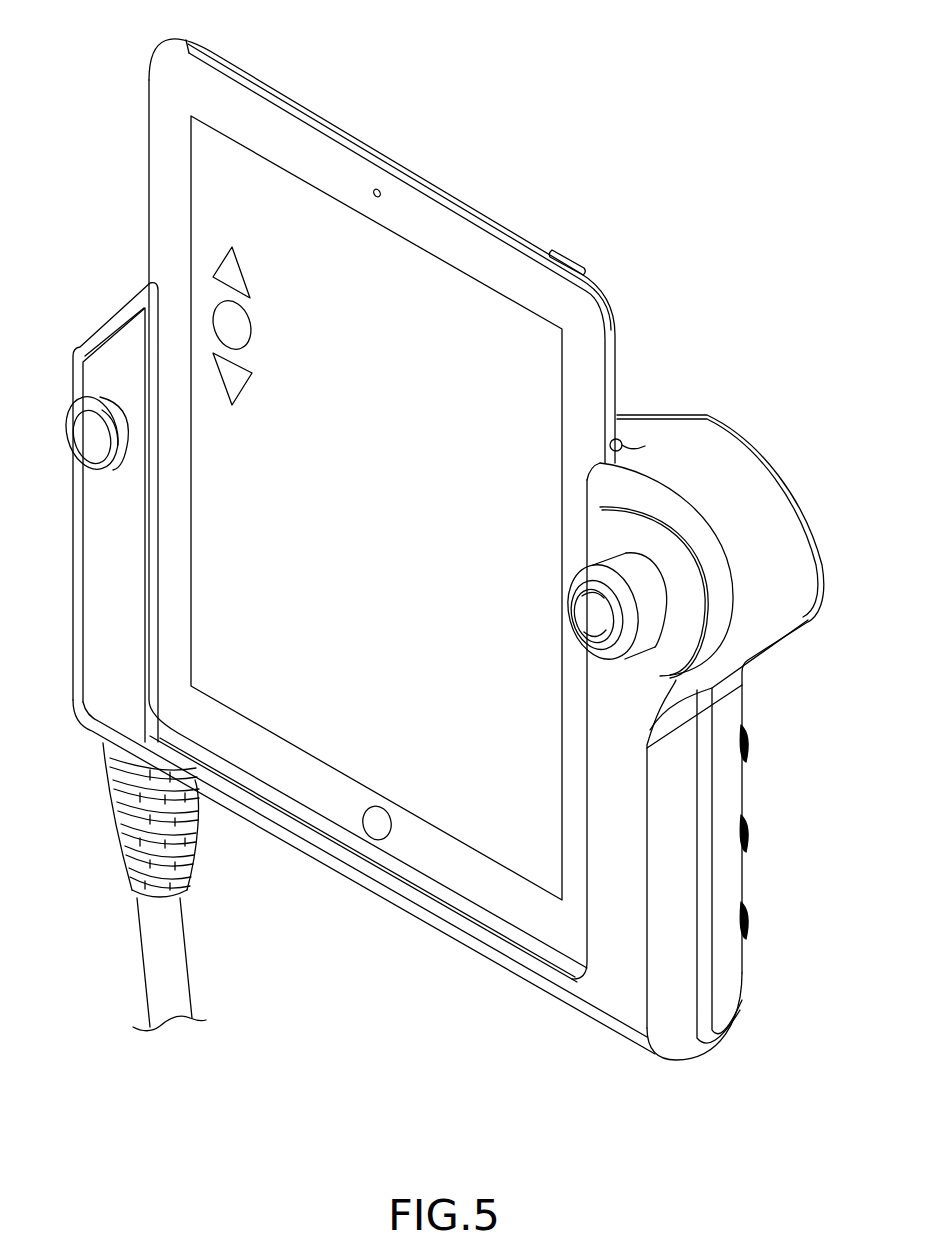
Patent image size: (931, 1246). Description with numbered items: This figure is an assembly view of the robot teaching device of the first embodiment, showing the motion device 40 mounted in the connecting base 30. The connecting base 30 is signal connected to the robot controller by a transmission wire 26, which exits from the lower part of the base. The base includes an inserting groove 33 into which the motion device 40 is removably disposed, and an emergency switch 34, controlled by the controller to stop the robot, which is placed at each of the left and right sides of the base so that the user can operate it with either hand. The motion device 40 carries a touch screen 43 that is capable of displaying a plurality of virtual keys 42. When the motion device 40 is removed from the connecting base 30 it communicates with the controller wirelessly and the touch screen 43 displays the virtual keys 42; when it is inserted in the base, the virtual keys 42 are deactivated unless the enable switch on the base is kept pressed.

The transmission wire 26 is at (160, 985).
The connecting base 30 is at (441, 671).
The inserting groove 33 is at (626, 452).
The emergency switch 34 is at (584, 600).
The motion device 40 is at (355, 503).
The virtual keys 42 is at (230, 268).
The touch screen 43 is at (470, 336).